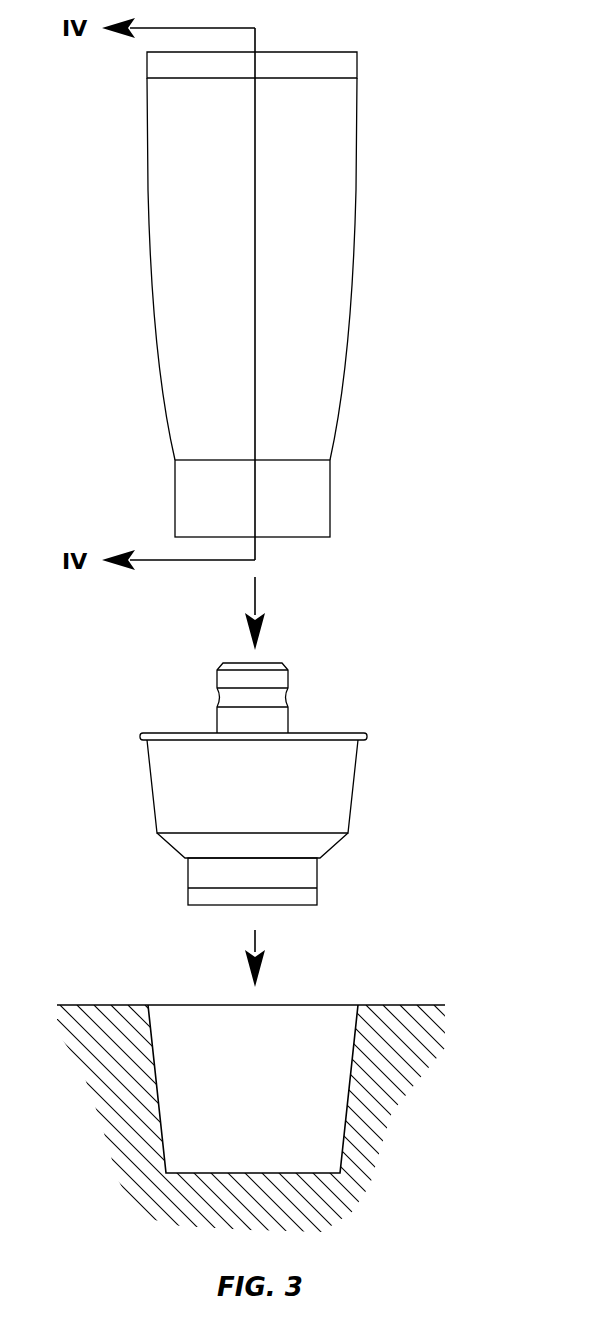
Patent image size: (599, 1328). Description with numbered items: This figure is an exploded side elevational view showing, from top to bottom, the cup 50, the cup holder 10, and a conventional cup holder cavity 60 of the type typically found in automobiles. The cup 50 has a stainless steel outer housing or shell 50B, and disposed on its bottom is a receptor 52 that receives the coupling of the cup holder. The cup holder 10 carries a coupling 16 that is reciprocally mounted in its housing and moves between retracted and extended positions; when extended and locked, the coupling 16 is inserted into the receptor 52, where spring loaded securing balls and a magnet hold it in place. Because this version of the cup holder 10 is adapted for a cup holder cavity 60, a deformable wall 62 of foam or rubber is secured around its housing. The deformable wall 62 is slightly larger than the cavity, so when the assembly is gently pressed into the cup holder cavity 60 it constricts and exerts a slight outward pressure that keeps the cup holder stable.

The cup 50 is at (298, 294).
The stainless steel outer housing or shell 50B is at (207, 245).
The receptor 52 is at (370, 497).
The cup holder 10 is at (292, 773).
The coupling 16 is at (303, 668).
The deformable wall or sleeve 62 is at (205, 783).
The cup holder cavity 60 is at (315, 1032).